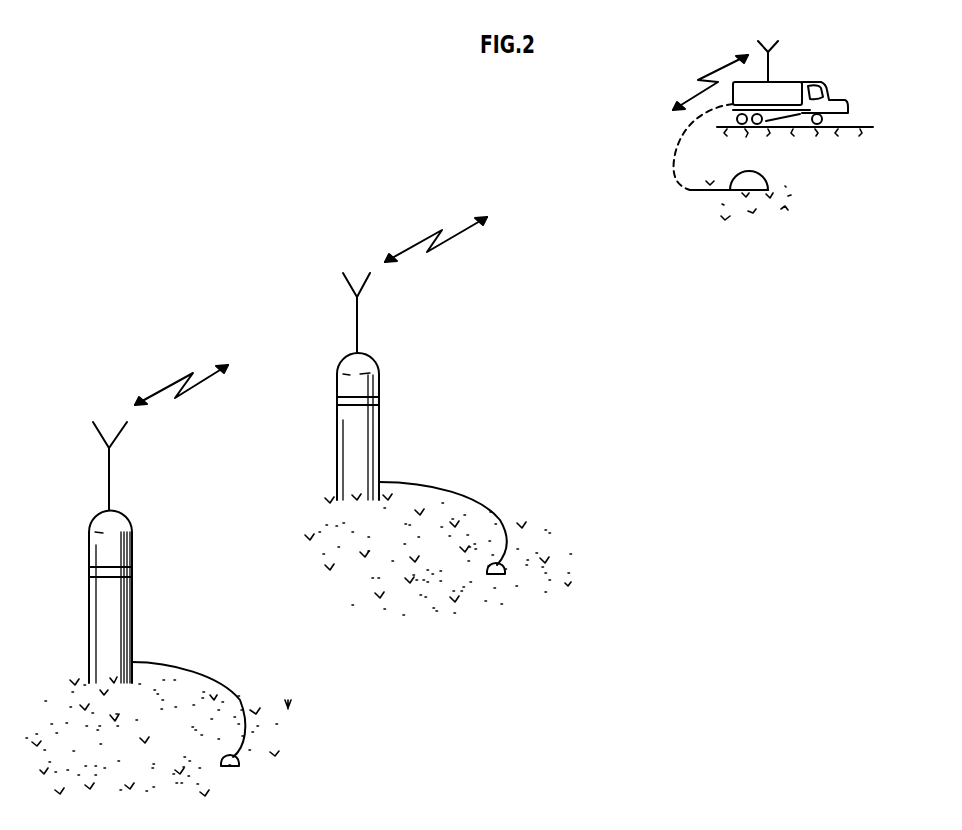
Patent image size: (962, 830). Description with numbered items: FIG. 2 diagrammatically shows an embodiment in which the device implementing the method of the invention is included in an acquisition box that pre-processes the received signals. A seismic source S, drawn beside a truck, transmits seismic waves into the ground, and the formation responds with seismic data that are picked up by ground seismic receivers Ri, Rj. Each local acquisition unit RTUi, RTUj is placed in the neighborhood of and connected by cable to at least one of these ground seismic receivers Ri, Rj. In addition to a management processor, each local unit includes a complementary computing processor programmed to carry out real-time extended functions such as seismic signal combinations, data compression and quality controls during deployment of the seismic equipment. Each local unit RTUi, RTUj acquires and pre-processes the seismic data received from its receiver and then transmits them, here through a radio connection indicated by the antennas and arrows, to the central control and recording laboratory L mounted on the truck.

The central control and recording laboratory L is at (804, 60).
The seismic source S is at (787, 179).
The local acquisition unit RTUi is at (138, 530).
The local acquisition unit RTUj is at (387, 393).
The ground seismic receiver Ri is at (191, 731).
The ground seismic receiver Rj is at (448, 547).